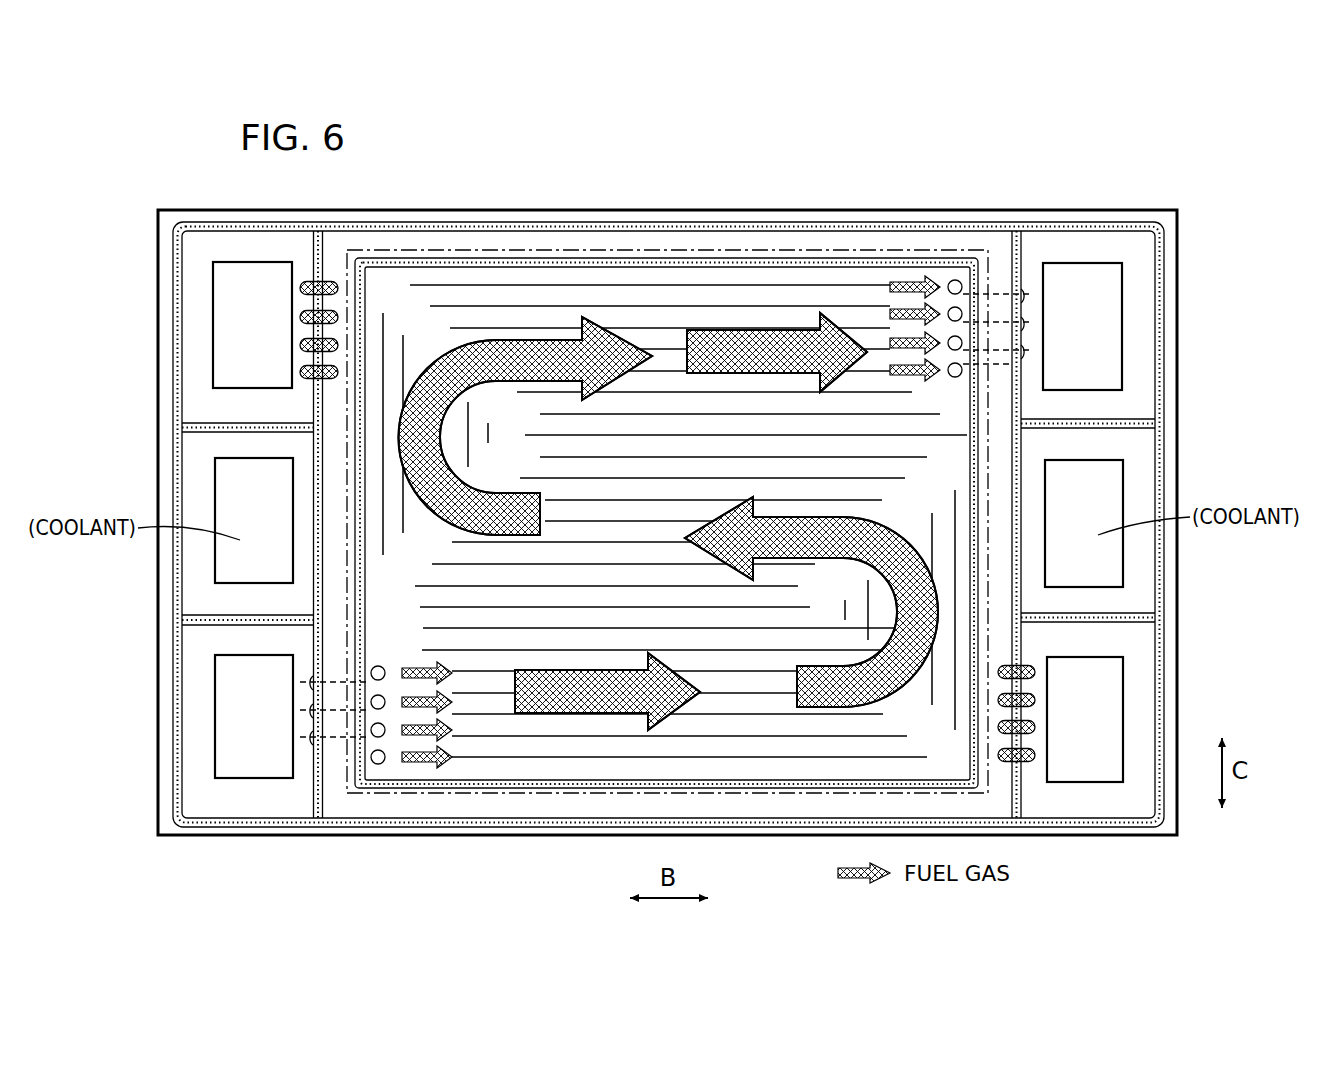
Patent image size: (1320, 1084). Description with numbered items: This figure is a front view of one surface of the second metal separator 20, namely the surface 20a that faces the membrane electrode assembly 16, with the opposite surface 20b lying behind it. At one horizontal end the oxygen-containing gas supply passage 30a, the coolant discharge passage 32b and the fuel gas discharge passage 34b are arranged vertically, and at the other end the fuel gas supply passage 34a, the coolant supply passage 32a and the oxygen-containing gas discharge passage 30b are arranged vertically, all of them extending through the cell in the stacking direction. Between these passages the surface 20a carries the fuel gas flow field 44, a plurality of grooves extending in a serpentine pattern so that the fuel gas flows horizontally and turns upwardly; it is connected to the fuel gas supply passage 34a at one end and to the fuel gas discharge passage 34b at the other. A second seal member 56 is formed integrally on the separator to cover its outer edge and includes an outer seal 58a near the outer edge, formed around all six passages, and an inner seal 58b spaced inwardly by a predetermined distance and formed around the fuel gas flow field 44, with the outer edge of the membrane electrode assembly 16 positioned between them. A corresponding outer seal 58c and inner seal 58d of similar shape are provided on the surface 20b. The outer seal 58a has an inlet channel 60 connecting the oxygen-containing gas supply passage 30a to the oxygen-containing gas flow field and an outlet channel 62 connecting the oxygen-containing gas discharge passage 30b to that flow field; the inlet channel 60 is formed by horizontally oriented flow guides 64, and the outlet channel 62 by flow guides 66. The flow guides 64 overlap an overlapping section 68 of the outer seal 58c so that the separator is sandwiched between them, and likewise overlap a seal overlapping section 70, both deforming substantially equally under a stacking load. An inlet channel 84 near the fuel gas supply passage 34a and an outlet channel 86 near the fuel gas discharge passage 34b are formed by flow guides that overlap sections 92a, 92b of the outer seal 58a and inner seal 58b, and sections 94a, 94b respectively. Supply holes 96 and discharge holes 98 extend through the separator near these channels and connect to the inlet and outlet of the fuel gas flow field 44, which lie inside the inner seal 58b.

The membrane electrode assembly 16 is at (603, 250).
The second metal separator 20 is at (667, 479).
The surface of the second metal separator 20a is at (667, 503).
The surface of the second metal separator 20b is at (702, 242).
The oxygen-containing gas supply passage 30a is at (1085, 719).
The oxygen-containing gas discharge passage 30b is at (252, 325).
The coolant supply passage 32a is at (254, 520).
The coolant discharge passage 32b is at (1084, 523).
The fuel gas supply passage 34a is at (254, 716).
The fuel gas discharge passage 34b is at (1082, 326).
The fuel gas flow field 44 is at (592, 730).
The second seal member 56 is at (668, 493).
The outer seal 58a is at (668, 499).
The inner seal 58b is at (666, 478).
The outer seal 58c is at (779, 222).
The inner seal 58d is at (666, 523).
The inlet channel 60 is at (1028, 776).
The outlet channel 62 is at (309, 268).
The flow guides 64 is at (1035, 757).
The flow guides 66 is at (303, 289).
The overlapping section 68 is at (1035, 745).
The seal overlapping section 70 is at (302, 302).
The inlet channel 84 is at (306, 777).
The outlet channel 86 is at (1032, 266).
The overlapping section of the outer seal 92a is at (322, 664).
The overlapping section of the inner seal 92b is at (666, 523).
The overlapping section of the outer seal 94a is at (1023, 389).
The overlapping section of the inner seal 94b is at (972, 387).
The supply holes 96 is at (379, 764).
The discharge holes 98 is at (956, 280).